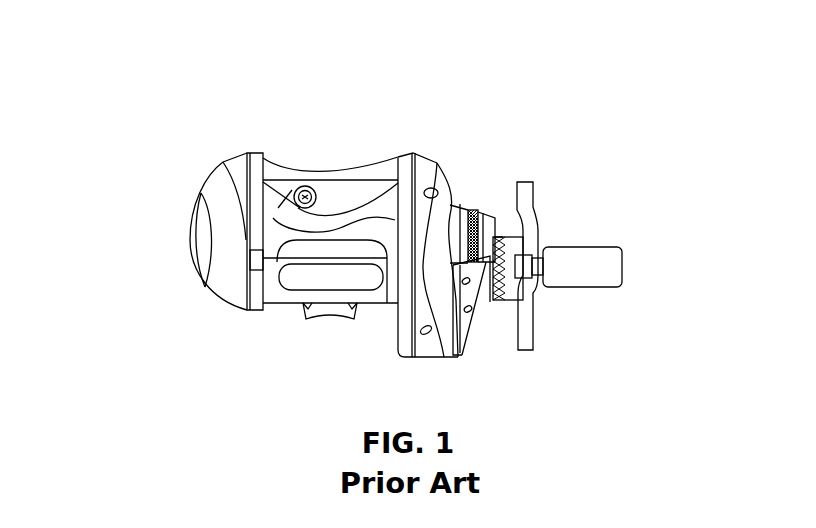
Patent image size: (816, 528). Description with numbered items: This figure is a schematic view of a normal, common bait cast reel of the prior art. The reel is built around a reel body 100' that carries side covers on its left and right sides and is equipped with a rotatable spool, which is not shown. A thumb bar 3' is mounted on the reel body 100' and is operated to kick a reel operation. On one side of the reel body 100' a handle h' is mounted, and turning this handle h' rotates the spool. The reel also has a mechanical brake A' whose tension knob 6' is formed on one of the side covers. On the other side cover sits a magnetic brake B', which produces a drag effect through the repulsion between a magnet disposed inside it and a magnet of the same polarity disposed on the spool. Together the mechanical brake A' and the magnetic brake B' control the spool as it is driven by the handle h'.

The reel body 100' is at (395, 248).
The thumb bar 3' is at (301, 149).
The mechanical brake A' is at (494, 171).
The magnetic brake B' is at (166, 231).
The tension knob 6' is at (480, 336).
The handle h' is at (624, 271).